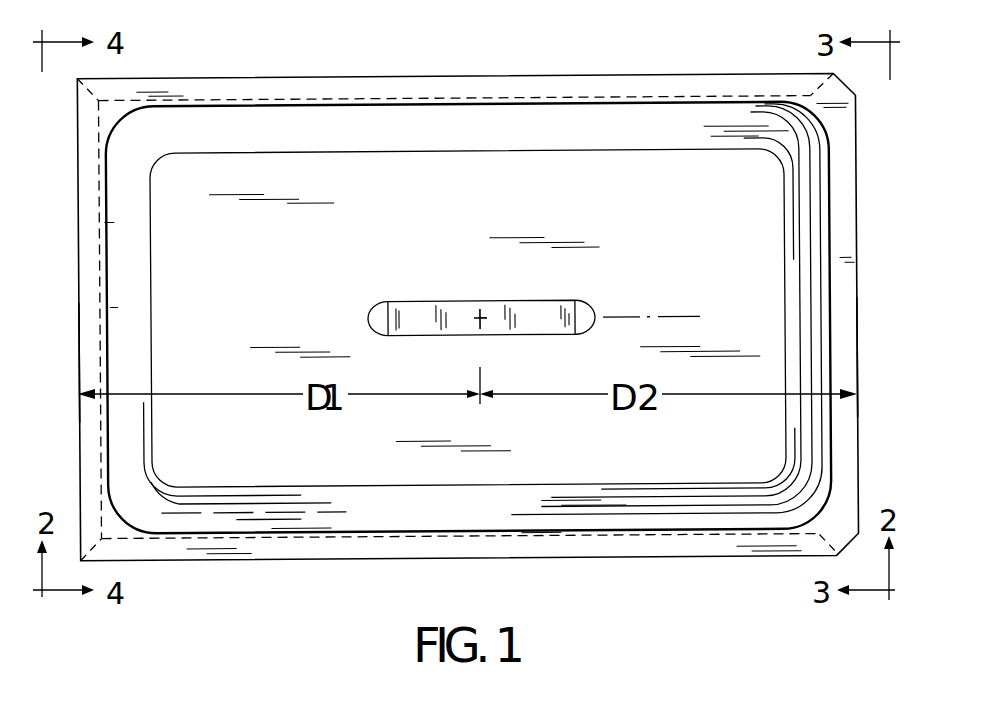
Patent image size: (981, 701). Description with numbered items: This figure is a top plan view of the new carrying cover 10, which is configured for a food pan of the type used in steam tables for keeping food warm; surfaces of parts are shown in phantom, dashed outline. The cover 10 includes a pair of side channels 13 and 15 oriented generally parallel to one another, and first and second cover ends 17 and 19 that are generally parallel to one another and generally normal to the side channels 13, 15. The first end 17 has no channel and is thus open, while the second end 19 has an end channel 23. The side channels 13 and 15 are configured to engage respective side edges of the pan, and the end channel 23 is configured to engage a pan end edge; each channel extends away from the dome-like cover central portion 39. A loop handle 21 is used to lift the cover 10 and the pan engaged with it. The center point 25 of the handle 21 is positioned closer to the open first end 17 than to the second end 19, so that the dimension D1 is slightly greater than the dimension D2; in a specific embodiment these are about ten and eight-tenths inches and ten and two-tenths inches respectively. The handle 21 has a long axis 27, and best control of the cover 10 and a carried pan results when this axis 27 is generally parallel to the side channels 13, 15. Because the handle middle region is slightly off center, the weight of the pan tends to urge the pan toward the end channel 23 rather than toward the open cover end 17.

The carrying cover 10 is at (350, 48).
The side channel 13 is at (534, 98).
The side channel 15 is at (479, 544).
The first cover end 17 is at (847, 410).
The second cover end 19 is at (100, 369).
The loop handle 21 is at (548, 311).
The end channel 23 is at (100, 226).
The center point of the handle 25 is at (481, 316).
The long axis 27 is at (665, 318).
The cover central portion 39 is at (313, 438).